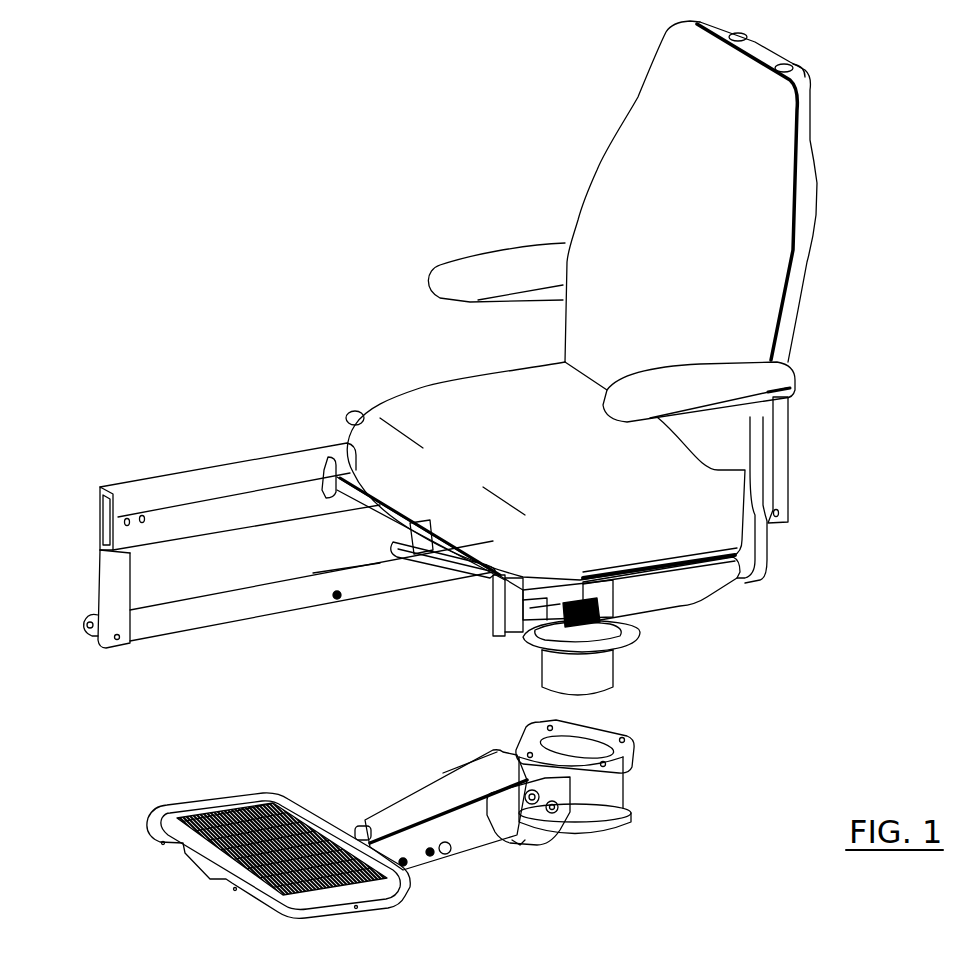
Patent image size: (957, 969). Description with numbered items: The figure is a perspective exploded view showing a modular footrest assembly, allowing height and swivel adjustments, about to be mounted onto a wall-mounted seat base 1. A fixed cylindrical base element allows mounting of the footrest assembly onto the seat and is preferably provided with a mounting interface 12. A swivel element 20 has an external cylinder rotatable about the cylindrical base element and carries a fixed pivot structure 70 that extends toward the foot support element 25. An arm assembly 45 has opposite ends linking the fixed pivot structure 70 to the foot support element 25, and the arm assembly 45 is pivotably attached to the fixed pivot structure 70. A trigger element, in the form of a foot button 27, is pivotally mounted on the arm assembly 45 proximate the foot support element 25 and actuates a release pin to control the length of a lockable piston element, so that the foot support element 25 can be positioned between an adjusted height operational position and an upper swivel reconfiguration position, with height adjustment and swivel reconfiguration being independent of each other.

The wall-mounted seat base 1 is at (707, 580).
The mounting interface 12 is at (622, 737).
The swivel element 20 is at (608, 785).
The fixed pivot structure 70 is at (562, 818).
The arm assembly 45 is at (428, 786).
The foot button 27 is at (362, 828).
The foot support element 25 is at (203, 867).